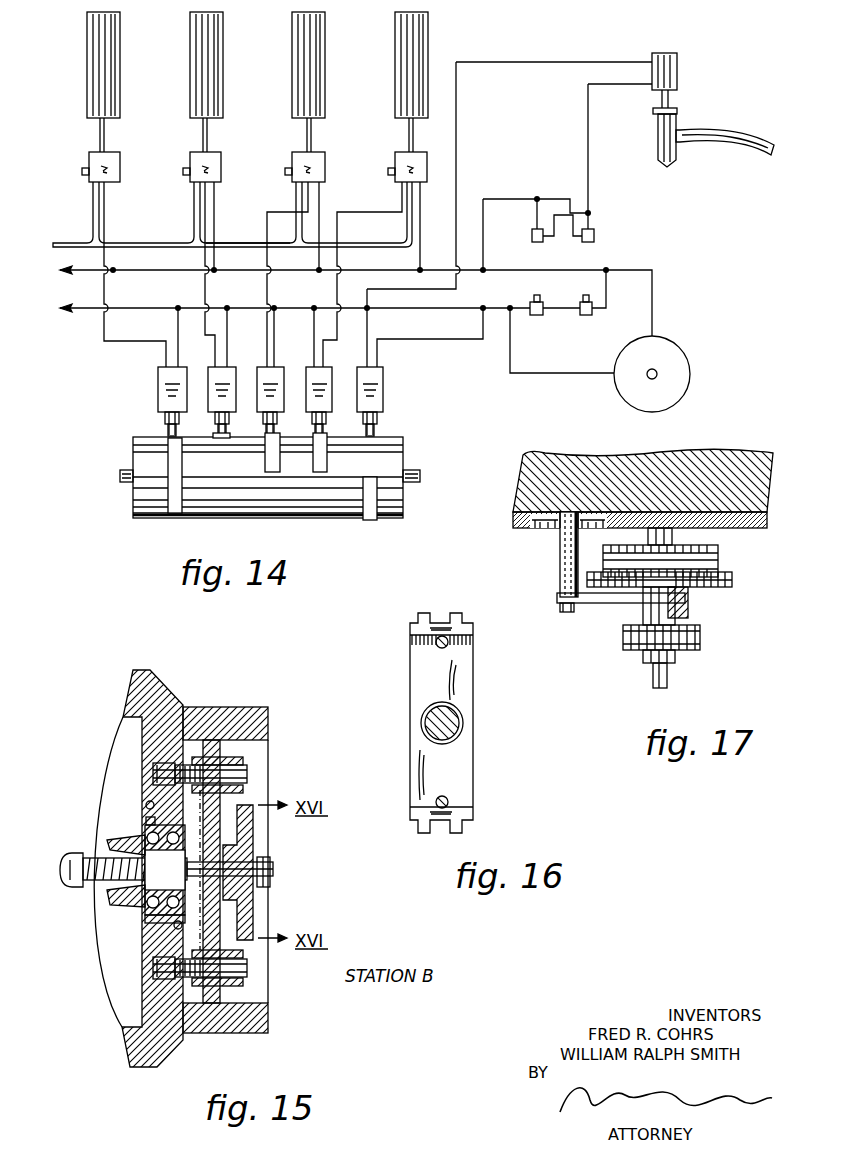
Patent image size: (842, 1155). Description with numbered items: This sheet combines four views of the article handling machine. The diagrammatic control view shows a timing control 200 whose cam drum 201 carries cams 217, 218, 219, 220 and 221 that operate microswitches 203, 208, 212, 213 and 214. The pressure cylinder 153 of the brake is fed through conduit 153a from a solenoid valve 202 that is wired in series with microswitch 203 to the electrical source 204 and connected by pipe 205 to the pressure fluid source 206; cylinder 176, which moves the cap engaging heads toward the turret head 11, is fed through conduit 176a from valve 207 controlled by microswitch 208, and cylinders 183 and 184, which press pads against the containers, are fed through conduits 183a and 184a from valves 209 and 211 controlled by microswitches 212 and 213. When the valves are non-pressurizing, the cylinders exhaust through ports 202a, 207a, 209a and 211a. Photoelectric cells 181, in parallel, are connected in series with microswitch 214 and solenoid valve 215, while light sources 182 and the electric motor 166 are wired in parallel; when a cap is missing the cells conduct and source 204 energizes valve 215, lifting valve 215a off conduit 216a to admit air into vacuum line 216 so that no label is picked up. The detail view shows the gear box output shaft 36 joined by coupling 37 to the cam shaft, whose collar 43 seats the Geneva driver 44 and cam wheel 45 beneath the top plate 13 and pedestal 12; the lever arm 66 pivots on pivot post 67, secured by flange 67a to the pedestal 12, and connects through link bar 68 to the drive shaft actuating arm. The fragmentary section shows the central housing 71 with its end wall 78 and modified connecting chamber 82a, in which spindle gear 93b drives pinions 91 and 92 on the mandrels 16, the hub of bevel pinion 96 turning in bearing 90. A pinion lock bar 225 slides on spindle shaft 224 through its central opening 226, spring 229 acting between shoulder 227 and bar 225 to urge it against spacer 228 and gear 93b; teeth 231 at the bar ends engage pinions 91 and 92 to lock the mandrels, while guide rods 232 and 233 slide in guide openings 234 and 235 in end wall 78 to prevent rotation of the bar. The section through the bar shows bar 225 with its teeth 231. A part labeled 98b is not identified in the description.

In FIG. 15, the turret head 11 is at (141, 666).
In FIG. 17, the pedestal 12 is at (720, 468).
In FIG. 17, the top plate 13 is at (762, 522).
In FIG. 15, the mandrel 16 is at (246, 770).
In FIG. 17, the output shaft 36 is at (667, 678).
In FIG. 17, the coupling 37 is at (700, 637).
In FIG. 17, the collar 43 is at (672, 540).
In FIG. 17, the Geneva driver 44 is at (717, 553).
In FIG. 17, the cam wheel 45 is at (732, 583).
In FIG. 17, the lever arm 66 is at (606, 602).
In FIG. 17, the pivot post 67 is at (560, 557).
In FIG. 17, the flange 67a is at (552, 528).
In FIG. 17, the link bar 68 is at (688, 610).
In FIG. 15, the central housing 71 is at (157, 683).
In FIG. 15, the end wall 78 is at (205, 708).
In FIG. 15, the connecting chamber 82a is at (262, 851).
In FIG. 15, the bearing 90 is at (150, 830).
In FIG. 15, the pinion 91 is at (213, 740).
In FIG. 15, the pinion 92 is at (212, 995).
In FIG. 15, the spindle gear 93b is at (258, 813).
In FIG. 15, the bevel pinion 96 is at (110, 895).
In FIG. 15, the knob 98b is at (66, 874).
In FIG. 14, the pressure cylinder 153 is at (107, 55).
In FIG. 14, the conduit 153a is at (105, 137).
In FIG. 14, the electric motor 166 is at (670, 366).
In FIG. 14, the pressure cylinder 176 is at (210, 57).
In FIG. 14, the conduit 176a is at (208, 137).
In FIG. 14, the photoelectric cell 181 is at (578, 254).
In FIG. 14, the light source 182 is at (538, 316).
In FIG. 14, the pressure cylinder 183 is at (313, 57).
In FIG. 14, the conduit 183a is at (312, 137).
In FIG. 14, the pressure cylinder 184 is at (415, 52).
In FIG. 14, the conduit 184a is at (408, 130).
In FIG. 14, the timing control 200 is at (130, 421).
In FIG. 14, the cam drum 201 is at (222, 518).
In FIG. 14, the solenoid valve 202 is at (121, 167).
In FIG. 14, the exhaust port 202a is at (82, 172).
In FIG. 14, the microswitch 203 is at (158, 378).
In FIG. 14, the source of electrical energy 204 is at (86, 308).
In FIG. 14, the pipe 205 is at (250, 238).
In FIG. 14, the source of pressure fluid 206 is at (73, 243).
In FIG. 14, the solenoid valve 207 is at (222, 167).
In FIG. 14, the exhaust port 207a is at (183, 172).
In FIG. 14, the microswitch 208 is at (216, 372).
In FIG. 14, the solenoid valve 209 is at (326, 167).
In FIG. 14, the exhaust port 209a is at (285, 172).
In FIG. 14, the solenoid valve 211 is at (416, 160).
In FIG. 14, the exhaust port 211a is at (388, 172).
In FIG. 14, the microswitch 212 is at (271, 373).
In FIG. 14, the microswitch 213 is at (321, 373).
In FIG. 14, the microswitch 214 is at (383, 377).
In FIG. 14, the solenoid valve 215 is at (676, 68).
In FIG. 14, the valve 215a is at (678, 109).
In FIG. 14, the vacuum line 216 is at (733, 136).
In FIG. 14, the conduit 216a is at (666, 140).
In FIG. 14, the cam 217 is at (168, 467).
In FIG. 14, the cam 218 is at (214, 436).
In FIG. 14, the cam 219 is at (265, 460).
In FIG. 14, the cam 220 is at (327, 462).
In FIG. 14, the cam 221 is at (374, 518).
In FIG. 16, the spindle shaft 224 is at (452, 728).
In FIG. 15, the spindle shaft 224 is at (250, 870).
In FIG. 16, the pinion lock bar 225 is at (463, 668).
In FIG. 15, the pinion lock bar 225 is at (217, 812).
In FIG. 15, the central opening 226 is at (263, 887).
In FIG. 15, the shoulder 227 is at (107, 845).
In FIG. 15, the spacer 228 is at (254, 846).
In FIG. 16, the spiral spring 229 is at (463, 716).
In FIG. 15, the spiral spring 229 is at (214, 836).
In FIG. 16, the teeth 231 is at (440, 616).
In FIG. 16, the guide rod 232 is at (436, 644).
In FIG. 15, the guide rod 232 is at (150, 803).
In FIG. 16, the guide rod 233 is at (450, 803).
In FIG. 15, the guide rod 233 is at (178, 926).
In FIG. 15, the guide opening 234 is at (155, 821).
In FIG. 15, the guide opening 235 is at (150, 920).